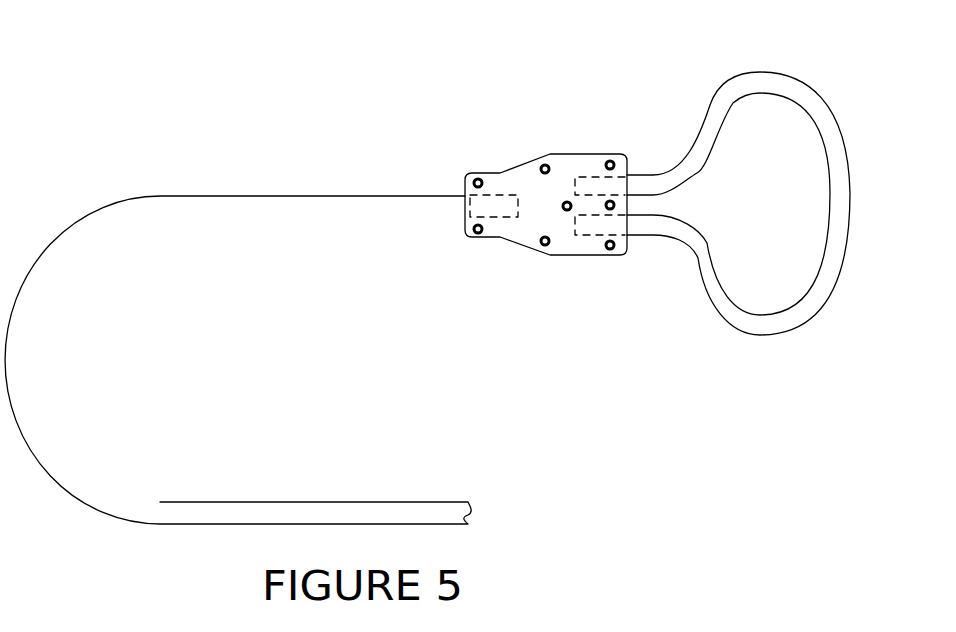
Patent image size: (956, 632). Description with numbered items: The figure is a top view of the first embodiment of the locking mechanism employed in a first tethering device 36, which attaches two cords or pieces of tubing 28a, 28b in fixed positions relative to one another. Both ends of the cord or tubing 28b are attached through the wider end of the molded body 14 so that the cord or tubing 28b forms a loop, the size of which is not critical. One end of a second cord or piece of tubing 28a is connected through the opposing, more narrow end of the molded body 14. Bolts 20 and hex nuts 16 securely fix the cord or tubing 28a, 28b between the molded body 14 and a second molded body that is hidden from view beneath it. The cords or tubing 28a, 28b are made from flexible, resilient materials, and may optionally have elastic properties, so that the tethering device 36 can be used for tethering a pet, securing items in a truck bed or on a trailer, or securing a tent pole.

The first tethering device 36 is at (213, 92).
The molded body 14 is at (513, 189).
The hex nuts 16 is at (464, 250).
The bolts 20 is at (468, 164).
The cord or tubing 28a is at (330, 487).
The cord or tubing 28b is at (687, 266).